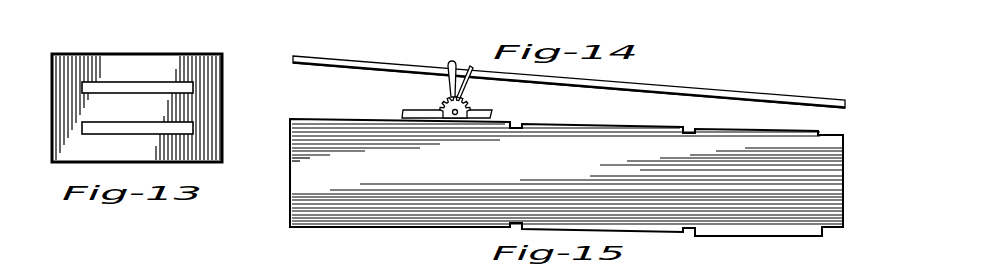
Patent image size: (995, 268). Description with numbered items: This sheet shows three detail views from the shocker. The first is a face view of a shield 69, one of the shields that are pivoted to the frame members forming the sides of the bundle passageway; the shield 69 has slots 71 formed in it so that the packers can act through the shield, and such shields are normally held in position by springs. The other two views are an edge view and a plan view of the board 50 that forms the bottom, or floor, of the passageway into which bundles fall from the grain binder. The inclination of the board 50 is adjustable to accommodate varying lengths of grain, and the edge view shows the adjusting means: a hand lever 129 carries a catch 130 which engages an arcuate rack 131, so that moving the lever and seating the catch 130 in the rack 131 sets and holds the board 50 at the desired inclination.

In FIG. 13, the shield 69 is at (131, 63).
In FIG. 13, the slots 71 is at (137, 100).
In FIG. 14, the board 50 is at (579, 84).
In FIG. 15, the board 50 is at (566, 177).
In FIG. 14, the hand lever 129 is at (450, 63).
In FIG. 14, the catch 130 is at (470, 101).
In FIG. 14, the arcuate rack 131 is at (441, 101).